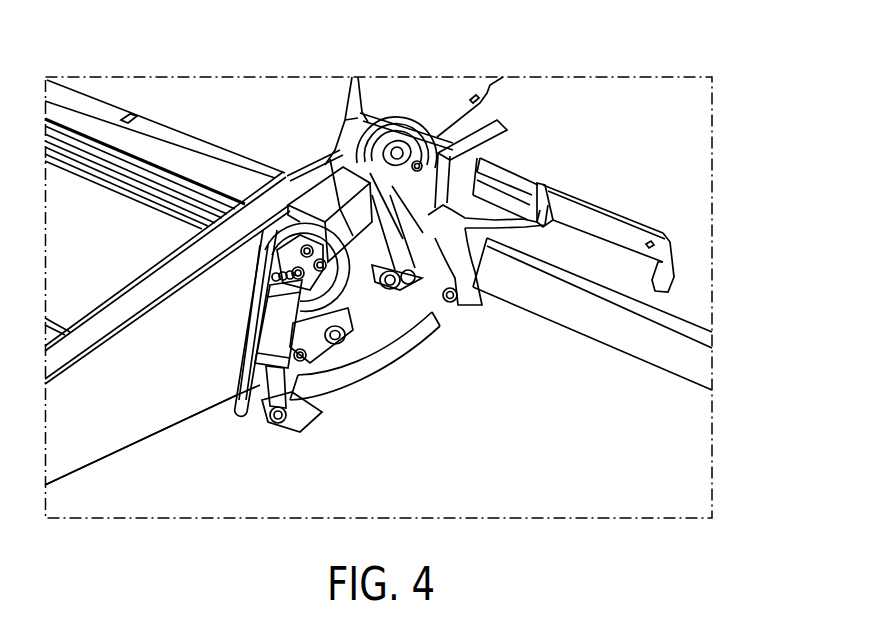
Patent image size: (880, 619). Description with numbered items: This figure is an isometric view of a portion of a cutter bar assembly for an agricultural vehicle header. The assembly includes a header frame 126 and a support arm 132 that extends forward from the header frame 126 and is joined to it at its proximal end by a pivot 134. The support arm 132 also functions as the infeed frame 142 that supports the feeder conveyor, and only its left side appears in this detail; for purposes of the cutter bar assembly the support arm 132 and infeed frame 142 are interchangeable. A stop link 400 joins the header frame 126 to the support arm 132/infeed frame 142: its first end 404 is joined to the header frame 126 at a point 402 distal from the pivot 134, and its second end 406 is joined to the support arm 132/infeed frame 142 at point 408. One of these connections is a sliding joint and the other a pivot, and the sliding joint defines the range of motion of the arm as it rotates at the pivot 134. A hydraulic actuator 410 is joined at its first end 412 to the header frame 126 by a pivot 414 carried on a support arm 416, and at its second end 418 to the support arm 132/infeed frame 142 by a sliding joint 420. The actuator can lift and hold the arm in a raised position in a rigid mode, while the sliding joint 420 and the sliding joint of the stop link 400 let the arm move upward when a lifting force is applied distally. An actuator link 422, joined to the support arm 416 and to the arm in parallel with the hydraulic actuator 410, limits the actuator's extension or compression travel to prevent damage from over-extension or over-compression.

The header frame 126 is at (685, 290).
The pivot 134 is at (412, 143).
The support arm 132 is at (200, 383).
The infeed frame 142 is at (141, 440).
The stop link 400 is at (368, 305).
The point 402 is at (343, 165).
The first end 404 is at (335, 192).
The second end 406 is at (368, 342).
The point 408 is at (330, 330).
The hydraulic actuator 410 is at (273, 347).
The first end 412 is at (300, 420).
The pivot 414 is at (278, 424).
The support arm 416 is at (345, 396).
The second end 418 is at (278, 300).
The sliding joint 420 is at (297, 253).
The actuator link 422 is at (245, 357).